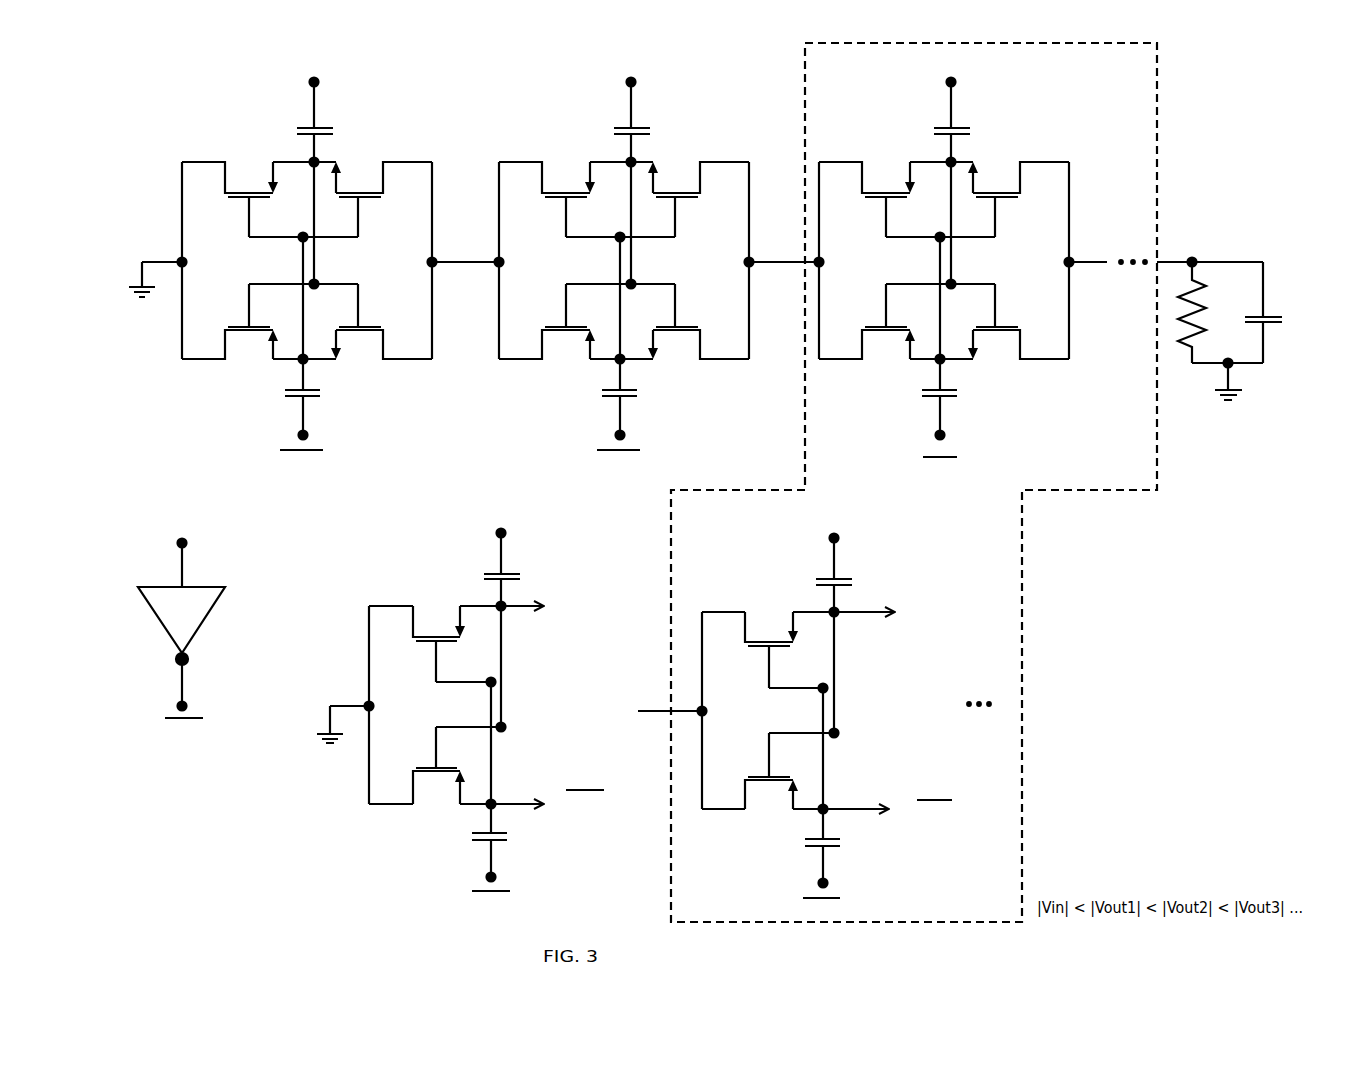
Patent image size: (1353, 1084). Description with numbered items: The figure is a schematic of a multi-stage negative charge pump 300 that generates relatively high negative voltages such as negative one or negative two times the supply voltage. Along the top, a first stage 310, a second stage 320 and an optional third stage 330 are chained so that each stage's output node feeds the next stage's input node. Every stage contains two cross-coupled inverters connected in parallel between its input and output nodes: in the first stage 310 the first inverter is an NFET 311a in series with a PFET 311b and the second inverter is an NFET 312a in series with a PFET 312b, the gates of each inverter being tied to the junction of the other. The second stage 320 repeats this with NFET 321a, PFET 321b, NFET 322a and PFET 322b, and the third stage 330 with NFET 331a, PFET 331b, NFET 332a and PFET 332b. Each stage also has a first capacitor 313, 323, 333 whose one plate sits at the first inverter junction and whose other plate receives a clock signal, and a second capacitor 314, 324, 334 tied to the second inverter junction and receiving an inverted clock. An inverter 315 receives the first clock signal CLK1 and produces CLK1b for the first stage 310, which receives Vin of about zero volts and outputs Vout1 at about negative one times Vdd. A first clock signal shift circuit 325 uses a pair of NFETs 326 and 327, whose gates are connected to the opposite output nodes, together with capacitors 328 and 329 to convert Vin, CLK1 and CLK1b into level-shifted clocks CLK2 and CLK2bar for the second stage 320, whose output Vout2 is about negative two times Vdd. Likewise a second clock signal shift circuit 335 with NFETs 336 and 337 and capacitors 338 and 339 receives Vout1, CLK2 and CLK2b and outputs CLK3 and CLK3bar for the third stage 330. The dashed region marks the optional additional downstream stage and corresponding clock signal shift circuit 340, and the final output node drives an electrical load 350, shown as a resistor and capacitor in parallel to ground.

The multi-stage negative charge pump 300 is at (148, 95).
The first stage 310 is at (307, 264).
The NFET of first inverter of first stage 311a is at (228, 210).
The PFET of first inverter of first stage 311b is at (388, 208).
The NFET of second inverter of first stage 312a is at (223, 318).
The PFET of second inverter of first stage 312b is at (389, 318).
The first capacitor of first stage 313 is at (285, 126).
The second capacitor of first stage 314 is at (283, 407).
The inverter 315 is at (227, 568).
The second stage 320 is at (624, 264).
The NFET of first inverter of second stage 321a is at (547, 205).
The PFET of first inverter of second stage 321b is at (698, 205).
The NFET of second inverter of second stage 322a is at (547, 319).
The PFET of second inverter of second stage 322b is at (698, 317).
The first capacitor of second stage 323 is at (608, 93).
The second capacitor of second stage 324 is at (607, 433).
The first clock signal shift circuit 325 is at (463, 708).
The NFET of first clock signal shift circuit 326 is at (413, 650).
The NFET of first clock signal shift circuit 327 is at (421, 754).
The capacitor of first clock signal shift circuit 328 is at (478, 568).
The capacitor of first clock signal shift circuit 329 is at (462, 834).
The third stage 330 is at (949, 267).
The NFET of first inverter of third stage 331a is at (867, 205).
The PFET of first inverter of third stage 331b is at (1018, 205).
The NFET of second inverter of third stage 332a is at (867, 319).
The PFET of second inverter of third stage 332b is at (1018, 317).
The first capacitor of third stage 333 is at (924, 93).
The second capacitor of third stage 334 is at (931, 435).
The second clock signal shift circuit 335 is at (808, 707).
The NFET of second clock signal shift circuit 336 is at (746, 656).
The NFET of second clock signal shift circuit 337 is at (755, 763).
The capacitor of second clock signal shift circuit 338 is at (810, 587).
The capacitor of second clock signal shift circuit 339 is at (795, 840).
The additional downstream stages and corresponding clock signal shift circuits 340 is at (1157, 100).
The electrical load 350 is at (1233, 219).